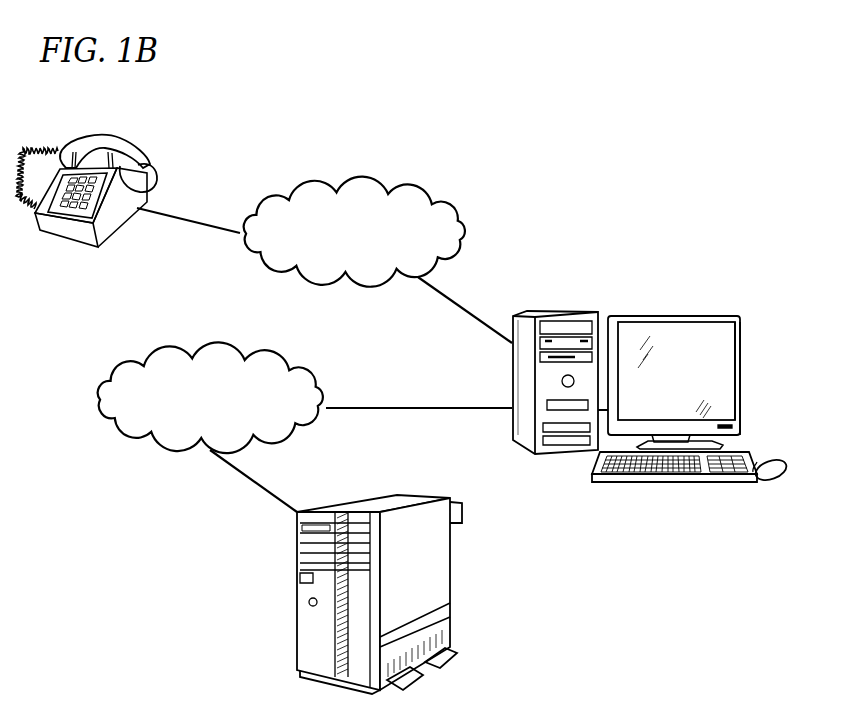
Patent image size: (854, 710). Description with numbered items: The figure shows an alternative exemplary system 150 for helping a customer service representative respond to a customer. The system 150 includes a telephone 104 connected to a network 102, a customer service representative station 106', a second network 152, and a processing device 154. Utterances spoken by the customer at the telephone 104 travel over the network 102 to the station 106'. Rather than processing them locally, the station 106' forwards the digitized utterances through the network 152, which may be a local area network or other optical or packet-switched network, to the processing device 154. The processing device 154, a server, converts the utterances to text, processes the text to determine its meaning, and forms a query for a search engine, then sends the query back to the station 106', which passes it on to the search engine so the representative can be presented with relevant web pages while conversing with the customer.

The exemplary system 150 is at (250, 142).
The telephone 104 is at (104, 143).
The network 102 is at (356, 178).
The network 152 is at (214, 346).
The customer service representative station 106' is at (651, 372).
The processing device 154 is at (452, 560).